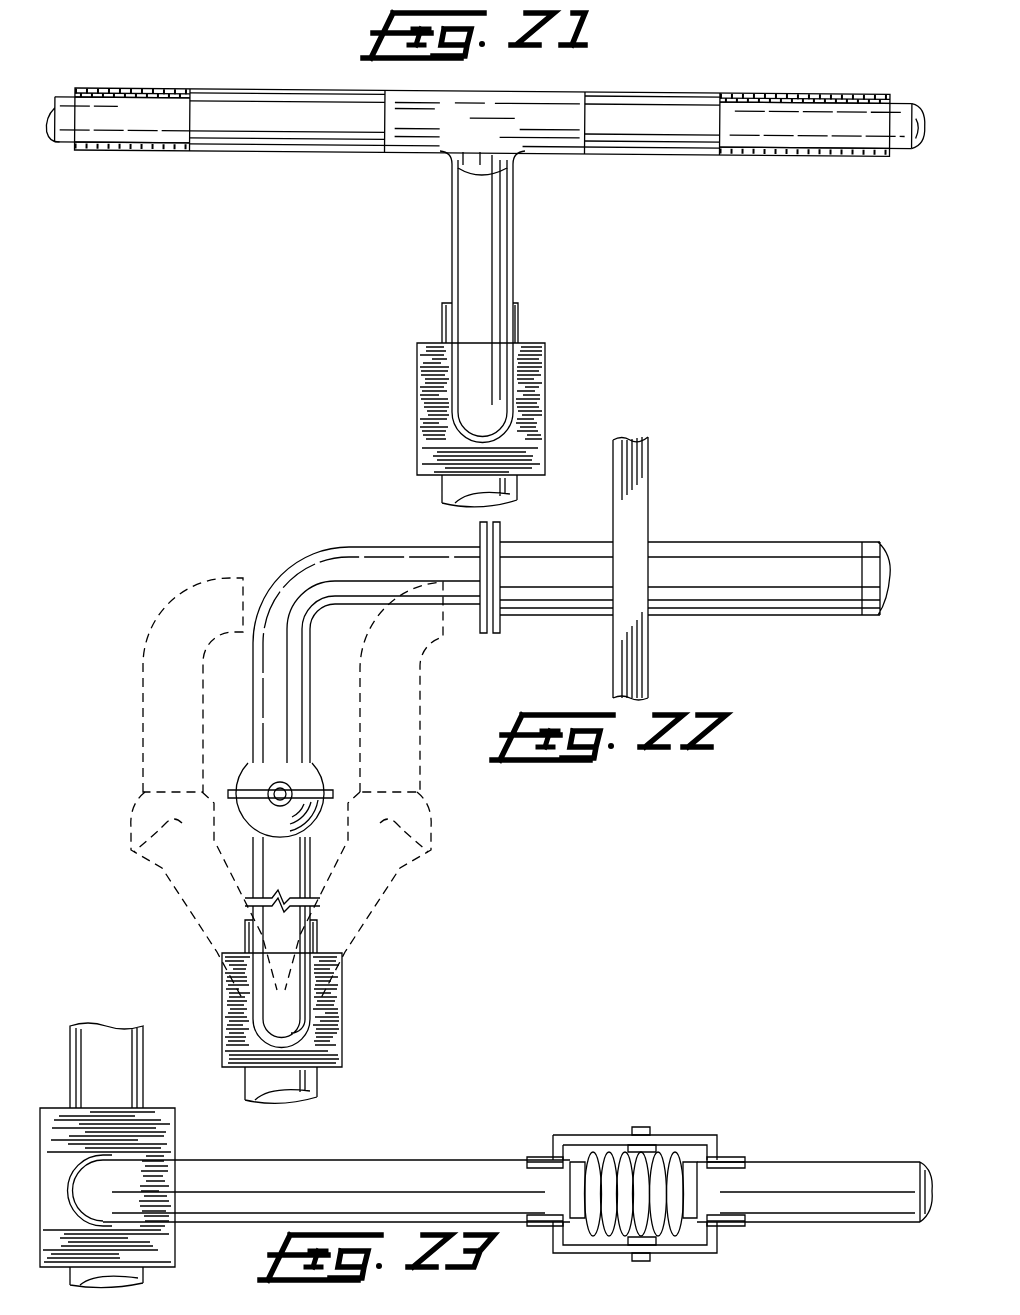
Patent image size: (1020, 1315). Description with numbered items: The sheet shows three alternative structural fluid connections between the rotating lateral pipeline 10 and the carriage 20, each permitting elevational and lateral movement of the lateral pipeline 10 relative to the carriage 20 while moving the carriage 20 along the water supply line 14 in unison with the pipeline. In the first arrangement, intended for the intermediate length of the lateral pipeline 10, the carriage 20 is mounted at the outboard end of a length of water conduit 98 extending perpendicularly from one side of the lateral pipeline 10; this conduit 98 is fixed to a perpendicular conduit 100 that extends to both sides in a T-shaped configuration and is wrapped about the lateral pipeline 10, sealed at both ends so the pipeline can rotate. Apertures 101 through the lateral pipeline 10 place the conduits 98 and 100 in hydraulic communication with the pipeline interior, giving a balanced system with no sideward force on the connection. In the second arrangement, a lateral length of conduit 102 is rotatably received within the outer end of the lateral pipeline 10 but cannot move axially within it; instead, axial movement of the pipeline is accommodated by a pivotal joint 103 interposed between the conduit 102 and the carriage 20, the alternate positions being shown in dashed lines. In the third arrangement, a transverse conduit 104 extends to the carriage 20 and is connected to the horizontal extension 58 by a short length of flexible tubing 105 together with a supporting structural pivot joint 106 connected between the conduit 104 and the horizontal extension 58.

In FIG. 21, the lateral pipeline 10 is at (163, 134).
In FIG. 22, the lateral pipeline 10 is at (555, 617).
In FIG. 21, the water supply line 14 is at (520, 331).
In FIG. 22, the water supply line 14 is at (318, 1092).
In FIG. 23, the water supply line 14 is at (152, 1055).
In FIG. 21, the carriage 20 is at (550, 367).
In FIG. 22, the carriage 20 is at (343, 1016).
In FIG. 23, the carriage 20 is at (177, 1139).
In FIG. 23, the horizontal extension 58 is at (840, 1162).
In FIG. 21, the water conduit 98 is at (513, 242).
In FIG. 21, the conduit 100 is at (350, 150).
In FIG. 21, the apertures 101 is at (446, 118).
In FIG. 22, the conduit 102 is at (150, 740).
In FIG. 22, the pivotal joint 103 is at (307, 779).
In FIG. 23, the transverse conduit 104 is at (420, 1153).
In FIG. 23, the flexible tubing 105 is at (663, 1153).
In FIG. 23, the structural pivot joint 106 is at (646, 1131).